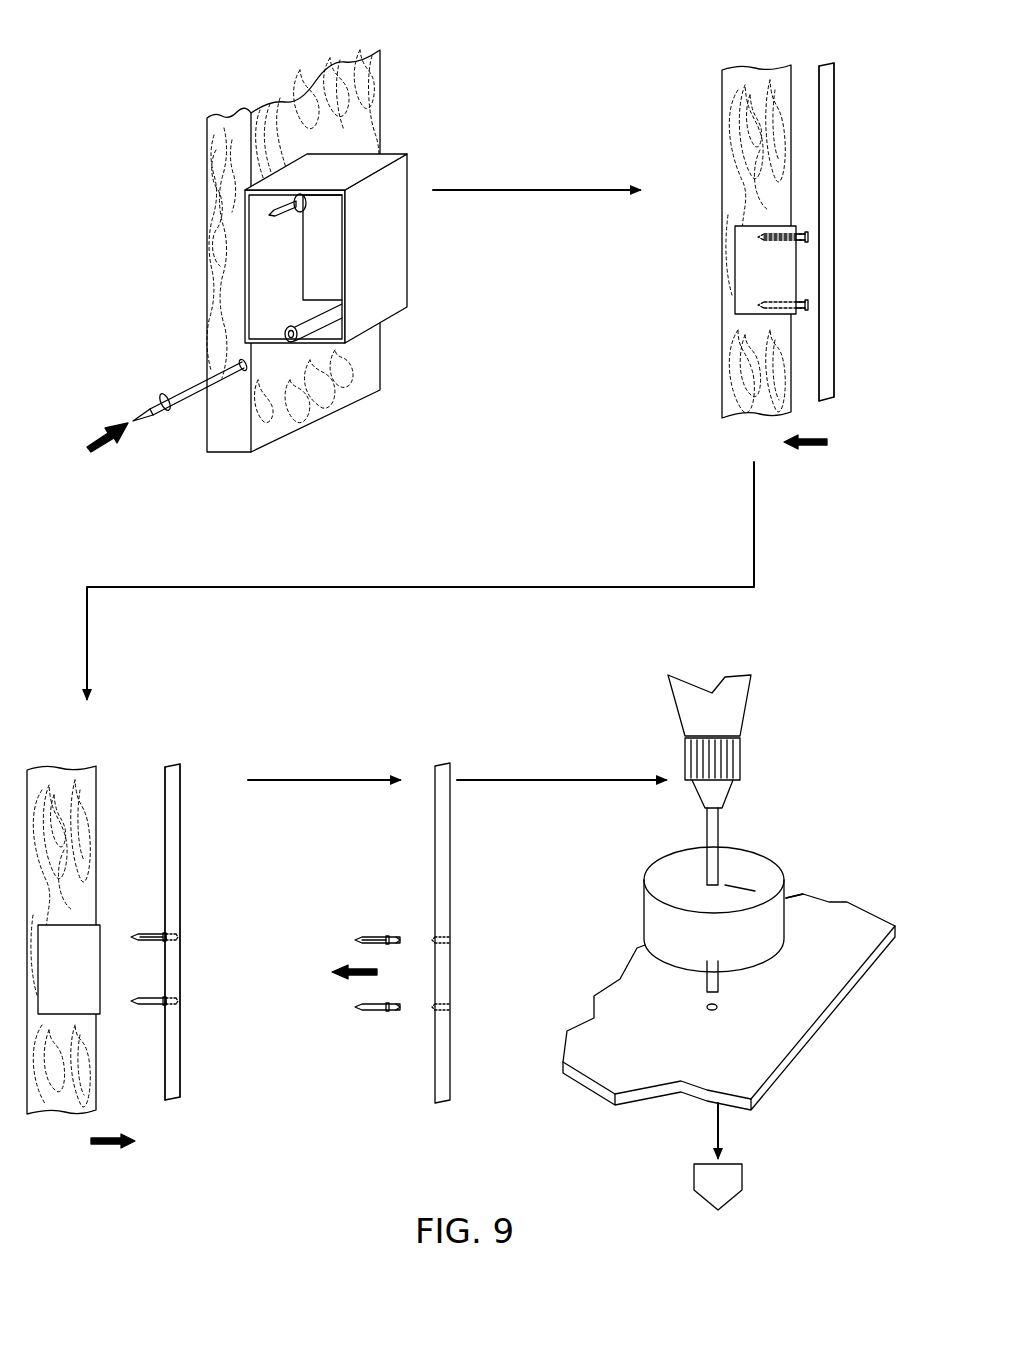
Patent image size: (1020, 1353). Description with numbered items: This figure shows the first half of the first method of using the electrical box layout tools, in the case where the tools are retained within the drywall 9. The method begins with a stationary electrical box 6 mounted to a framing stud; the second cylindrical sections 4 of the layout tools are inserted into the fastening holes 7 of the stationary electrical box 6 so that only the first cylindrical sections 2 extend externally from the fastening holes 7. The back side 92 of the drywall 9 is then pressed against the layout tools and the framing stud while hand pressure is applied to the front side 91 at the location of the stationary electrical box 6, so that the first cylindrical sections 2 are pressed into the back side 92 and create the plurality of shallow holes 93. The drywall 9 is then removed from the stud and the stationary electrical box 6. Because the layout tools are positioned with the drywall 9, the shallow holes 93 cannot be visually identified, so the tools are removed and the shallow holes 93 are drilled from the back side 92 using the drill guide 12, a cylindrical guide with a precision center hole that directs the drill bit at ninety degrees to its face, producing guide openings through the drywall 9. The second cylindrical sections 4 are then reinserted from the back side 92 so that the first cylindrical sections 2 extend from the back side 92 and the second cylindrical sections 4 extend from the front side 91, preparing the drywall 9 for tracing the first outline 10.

The first cylindrical section 2 is at (276, 215).
The second cylindrical section 4 is at (190, 385).
The stationary electrical box 6 is at (398, 250).
The fastening hole 7 is at (295, 334).
The drywall 9 is at (825, 57).
The front side 91 is at (834, 98).
The back side 92 is at (818, 73).
The shallow hole 93 is at (444, 940).
The drill guide 12 is at (650, 905).
The first outline 10 is at (718, 1187).